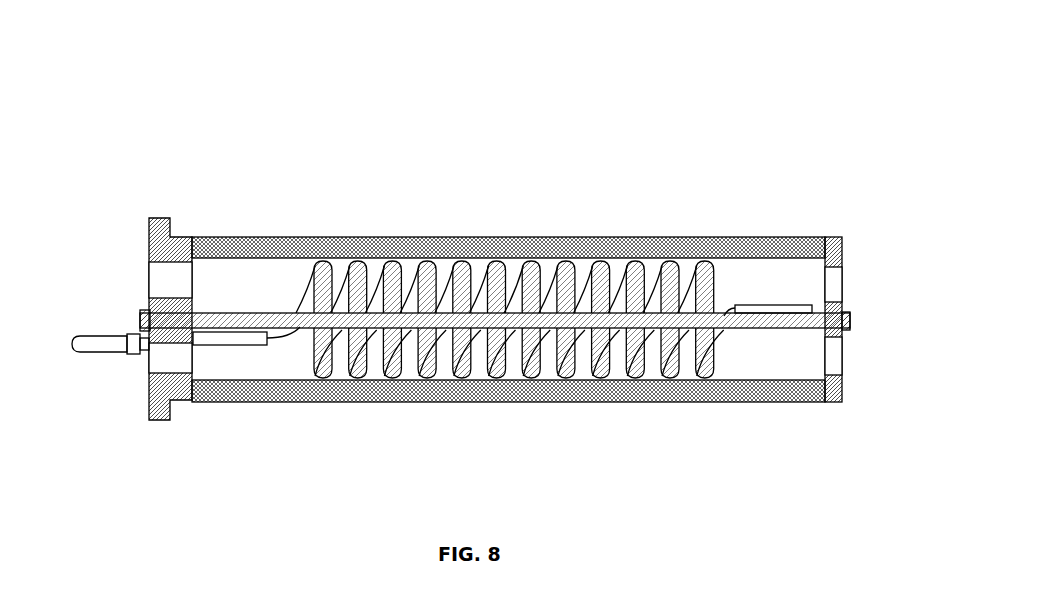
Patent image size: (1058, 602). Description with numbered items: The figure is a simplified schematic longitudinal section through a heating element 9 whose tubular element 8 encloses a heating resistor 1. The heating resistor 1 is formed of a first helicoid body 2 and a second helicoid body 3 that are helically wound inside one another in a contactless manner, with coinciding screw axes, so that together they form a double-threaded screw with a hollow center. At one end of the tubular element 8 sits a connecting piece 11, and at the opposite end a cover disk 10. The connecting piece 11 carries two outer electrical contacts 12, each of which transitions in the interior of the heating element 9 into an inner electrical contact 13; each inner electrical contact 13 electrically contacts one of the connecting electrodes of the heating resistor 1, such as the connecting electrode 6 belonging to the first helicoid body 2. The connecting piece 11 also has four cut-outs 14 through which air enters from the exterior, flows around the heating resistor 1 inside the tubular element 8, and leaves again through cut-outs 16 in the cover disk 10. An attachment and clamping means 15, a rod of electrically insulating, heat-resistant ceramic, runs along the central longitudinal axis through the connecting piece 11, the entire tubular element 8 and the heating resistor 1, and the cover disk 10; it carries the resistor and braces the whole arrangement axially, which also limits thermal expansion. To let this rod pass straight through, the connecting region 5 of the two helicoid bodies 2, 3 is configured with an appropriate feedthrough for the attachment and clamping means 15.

The heating resistor 1 is at (280, 292).
The first helicoid body 2 is at (425, 270).
The second helicoid body 3 is at (392, 368).
The connecting region 5 is at (777, 302).
The connecting electrode 6 is at (238, 345).
The tubular element 8 is at (492, 234).
The heating element 9 is at (295, 181).
The cover disk 10 is at (831, 250).
The connecting piece 11 is at (170, 213).
The outer electrical contact 12 is at (92, 347).
The inner electrical contact 13 is at (215, 347).
The cut-outs 14 is at (173, 280).
The attachment and clamping means 15 is at (740, 322).
The cut-outs 16 is at (835, 285).